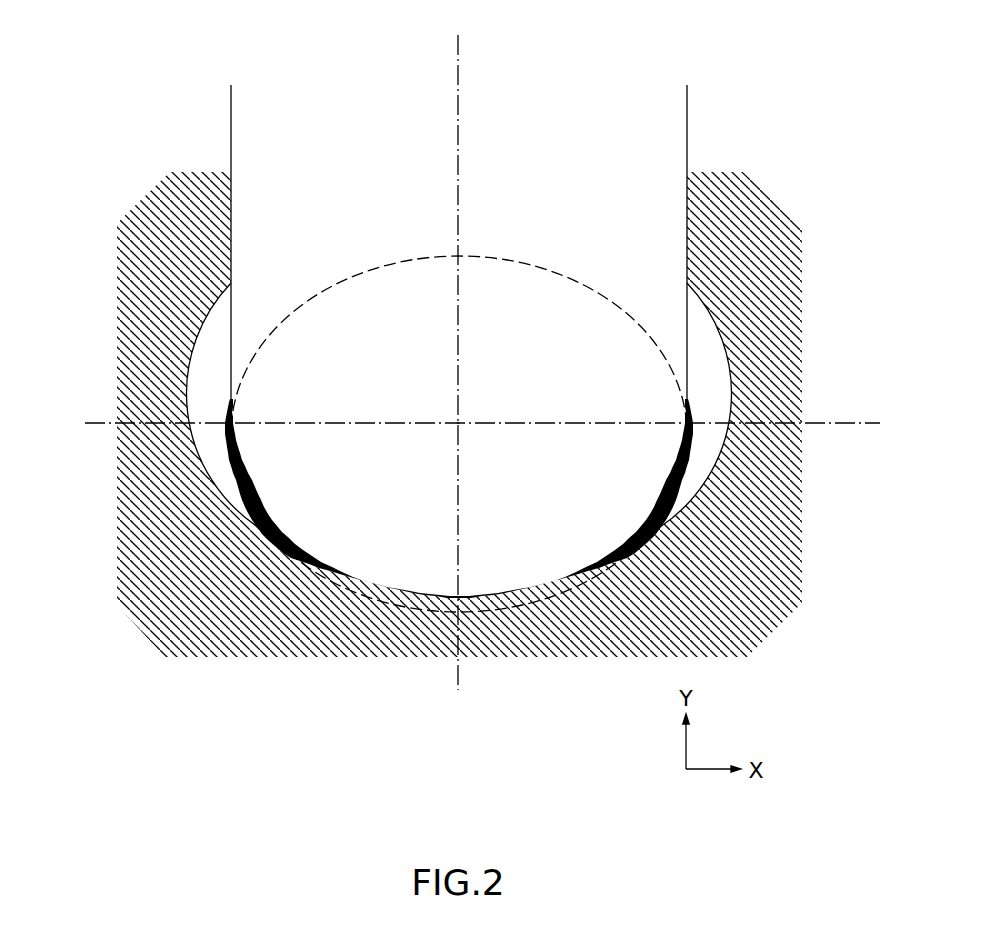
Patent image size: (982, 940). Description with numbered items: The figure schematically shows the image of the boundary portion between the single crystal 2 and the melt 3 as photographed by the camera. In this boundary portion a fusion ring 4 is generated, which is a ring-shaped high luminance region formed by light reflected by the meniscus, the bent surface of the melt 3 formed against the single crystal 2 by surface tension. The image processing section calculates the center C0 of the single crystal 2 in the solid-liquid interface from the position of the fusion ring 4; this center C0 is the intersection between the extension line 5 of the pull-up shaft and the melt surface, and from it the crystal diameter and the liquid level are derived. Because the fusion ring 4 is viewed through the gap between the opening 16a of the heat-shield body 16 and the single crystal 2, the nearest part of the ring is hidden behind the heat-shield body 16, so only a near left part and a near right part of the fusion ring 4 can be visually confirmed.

The single crystal 2 is at (242, 146).
The melt 3 is at (703, 372).
The fusion ring 4 is at (252, 522).
The extension line of the pull-up shaft 5 is at (458, 345).
The heat-shield body 16 is at (160, 332).
The opening 16a is at (198, 395).
The center C0 is at (450, 414).